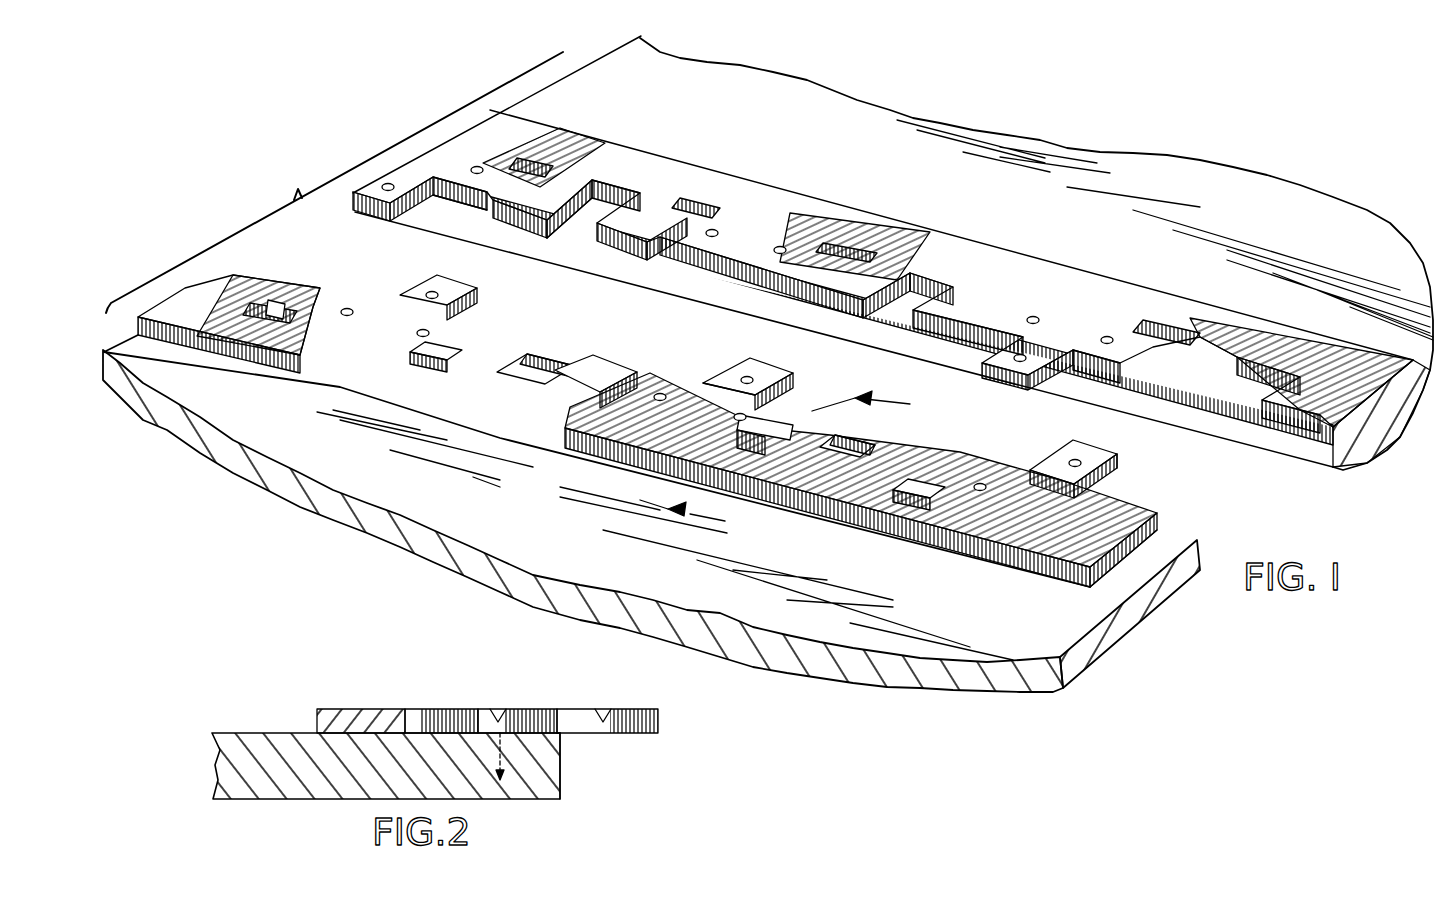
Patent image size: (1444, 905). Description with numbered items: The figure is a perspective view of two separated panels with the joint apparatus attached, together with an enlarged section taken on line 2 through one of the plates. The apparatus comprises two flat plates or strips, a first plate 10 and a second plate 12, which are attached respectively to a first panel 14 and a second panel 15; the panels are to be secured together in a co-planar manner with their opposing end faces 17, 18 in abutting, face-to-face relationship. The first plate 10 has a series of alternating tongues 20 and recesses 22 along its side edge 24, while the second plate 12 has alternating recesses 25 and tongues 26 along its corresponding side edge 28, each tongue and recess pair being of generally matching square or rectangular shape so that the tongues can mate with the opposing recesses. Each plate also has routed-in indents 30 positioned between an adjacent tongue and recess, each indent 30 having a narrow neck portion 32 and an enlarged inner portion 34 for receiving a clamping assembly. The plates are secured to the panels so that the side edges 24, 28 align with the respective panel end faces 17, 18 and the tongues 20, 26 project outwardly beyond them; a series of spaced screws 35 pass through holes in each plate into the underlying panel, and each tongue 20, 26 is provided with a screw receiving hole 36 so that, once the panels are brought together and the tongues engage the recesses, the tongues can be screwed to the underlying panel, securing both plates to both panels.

In FIG. 1, the section line 2— 2 is at (781, 464).
In FIG. 1, the first plate 10 is at (840, 197).
In FIG. 1, the second plate 12 is at (992, 566).
In FIG. 2, the second plate 12 is at (368, 708).
In FIG. 1, the first panel 14 is at (817, 93).
In FIG. 1, the second panel 15 is at (443, 503).
In FIG. 2, the second panel 15 is at (272, 748).
In FIG. 1, the end face of first panel 17 is at (1293, 447).
In FIG. 1, the end face of second panel 18 is at (1195, 553).
In FIG. 2, the end face of second panel 18 is at (560, 775).
In FIG. 1, the tongues of first plate 20 is at (353, 212).
In FIG. 1, the recesses of first plate 22 is at (612, 183).
In FIG. 1, the side edge of first plate 24 is at (620, 245).
In FIG. 1, the recesses of second plate 25 is at (224, 297).
In FIG. 1, the tongues of second plate 26 is at (432, 275).
In FIG. 2, the tongues of second plate 26 is at (660, 727).
In FIG. 1, the side edge of second plate 28 is at (598, 360).
In FIG. 2, the side edge of second plate 28 is at (560, 734).
In FIG. 1, the indent 30 is at (720, 225).
In FIG. 1, the neck portion 32 is at (493, 238).
In FIG. 2, the neck portion 32 is at (540, 716).
In FIG. 1, the enlarged inner portion 34 is at (565, 160).
In FIG. 2, the enlarged inner portion 34 is at (430, 722).
In FIG. 1, the screws 35 is at (732, 233).
In FIG. 2, the screws 35 is at (496, 722).
In FIG. 1, the screw receiving hole 36 is at (703, 300).
In FIG. 2, the screw receiving hole 36 is at (592, 705).